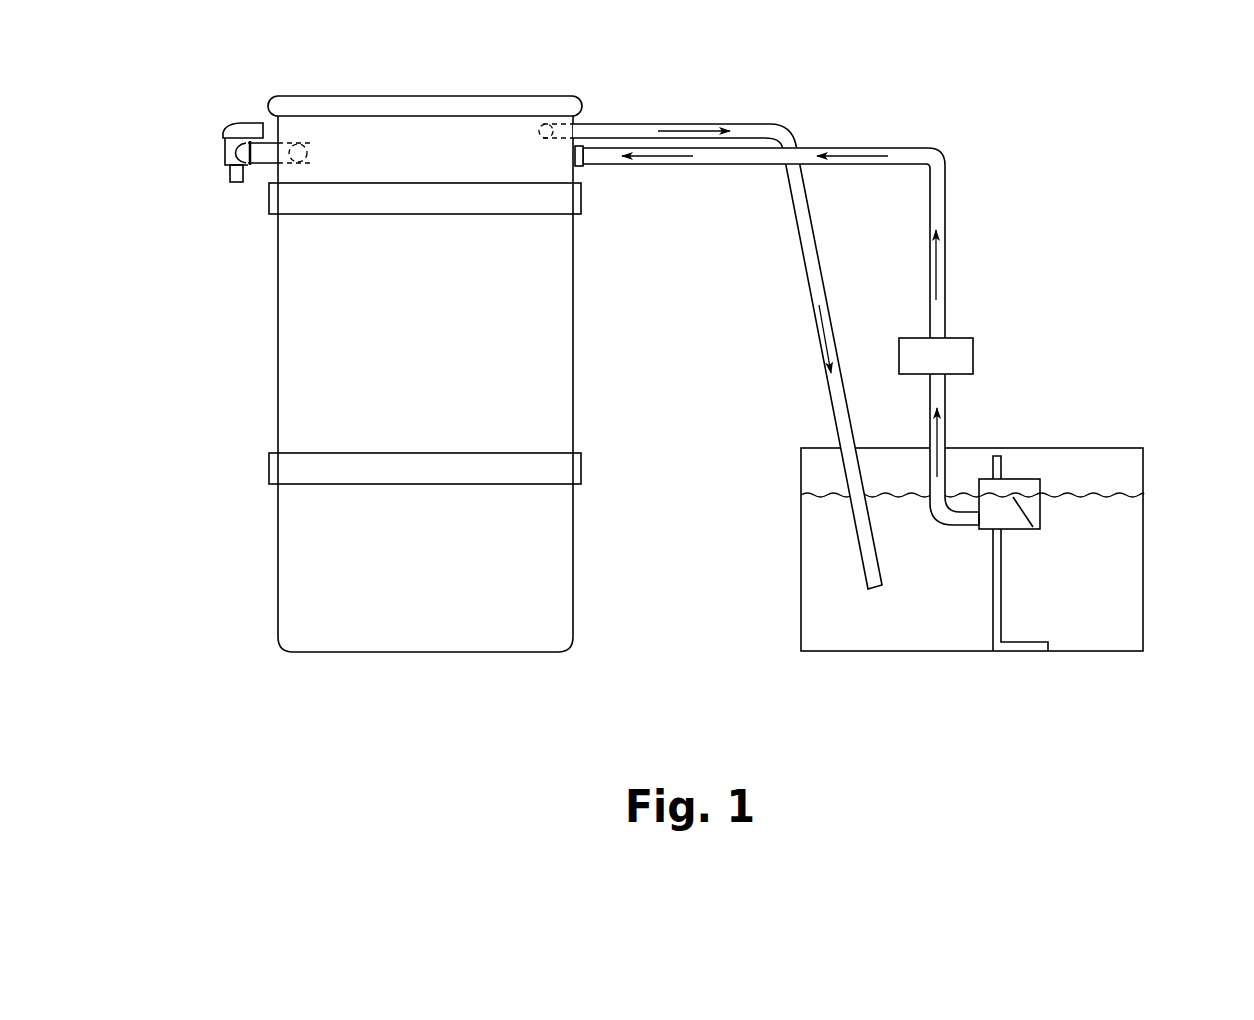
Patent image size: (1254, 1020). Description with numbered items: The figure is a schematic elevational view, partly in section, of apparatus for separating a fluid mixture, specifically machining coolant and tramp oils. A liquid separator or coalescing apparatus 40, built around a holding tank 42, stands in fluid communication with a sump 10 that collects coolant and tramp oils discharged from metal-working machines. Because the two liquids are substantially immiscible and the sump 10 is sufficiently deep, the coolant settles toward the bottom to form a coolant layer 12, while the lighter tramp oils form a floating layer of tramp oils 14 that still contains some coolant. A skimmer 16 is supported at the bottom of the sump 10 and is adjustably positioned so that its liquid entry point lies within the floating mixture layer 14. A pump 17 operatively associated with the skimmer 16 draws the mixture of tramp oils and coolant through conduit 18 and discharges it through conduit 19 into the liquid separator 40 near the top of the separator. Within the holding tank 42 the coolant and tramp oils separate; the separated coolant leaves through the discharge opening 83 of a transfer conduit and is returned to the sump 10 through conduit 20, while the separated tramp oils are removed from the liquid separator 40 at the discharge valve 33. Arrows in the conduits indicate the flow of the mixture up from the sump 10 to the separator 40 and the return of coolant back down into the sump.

The sump 10 is at (913, 353).
The coolant layer 12 is at (867, 612).
The layer of tramp oils 14 is at (1122, 527).
The skimmer 16 is at (1013, 529).
The pump 17 is at (973, 358).
The conduit 18 is at (944, 397).
The conduit 19 is at (836, 335).
The conduit 20 is at (737, 122).
The discharge valve 33 is at (238, 122).
The liquid separator 40 is at (418, 374).
The holding tank 42 is at (558, 368).
The discharge opening 83 is at (542, 126).